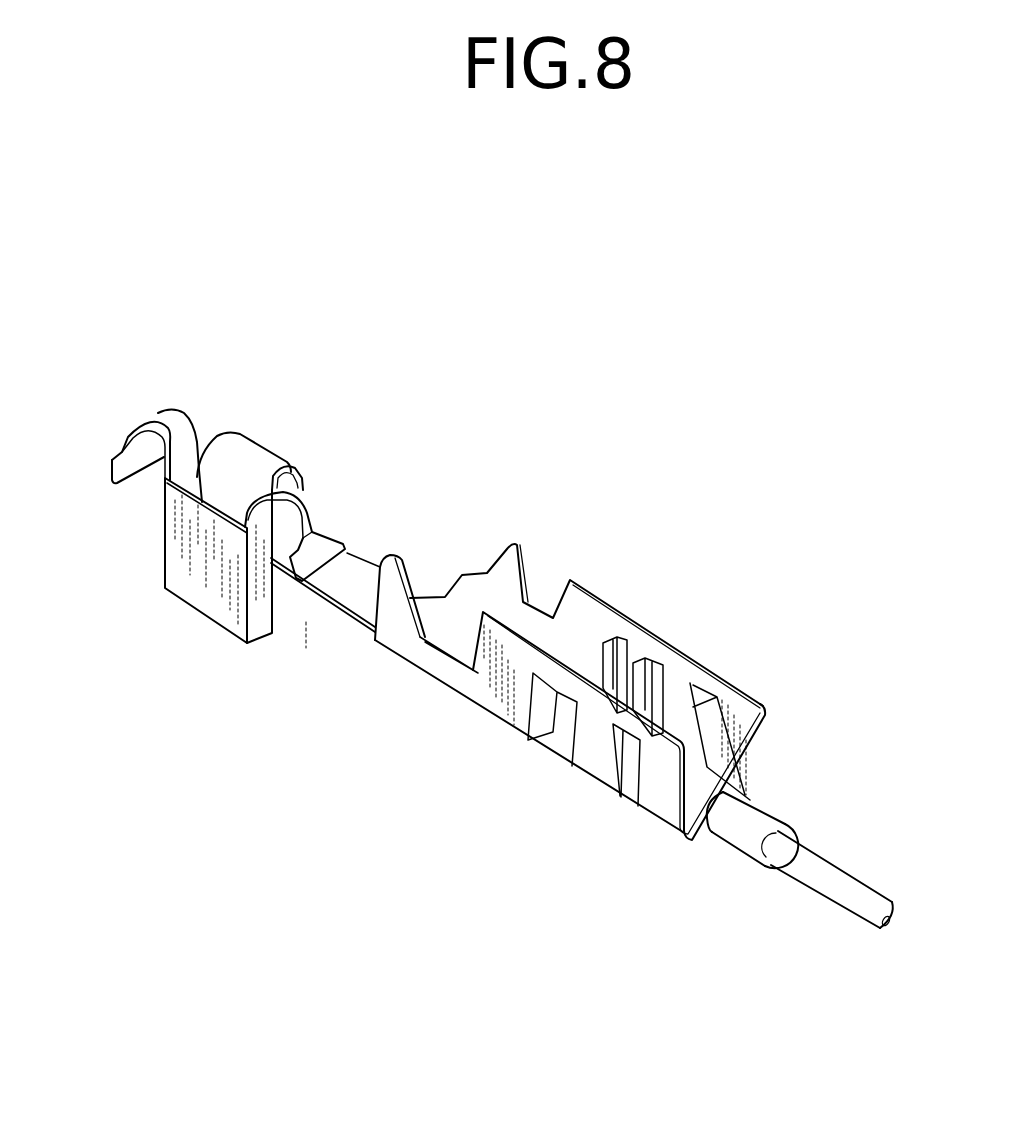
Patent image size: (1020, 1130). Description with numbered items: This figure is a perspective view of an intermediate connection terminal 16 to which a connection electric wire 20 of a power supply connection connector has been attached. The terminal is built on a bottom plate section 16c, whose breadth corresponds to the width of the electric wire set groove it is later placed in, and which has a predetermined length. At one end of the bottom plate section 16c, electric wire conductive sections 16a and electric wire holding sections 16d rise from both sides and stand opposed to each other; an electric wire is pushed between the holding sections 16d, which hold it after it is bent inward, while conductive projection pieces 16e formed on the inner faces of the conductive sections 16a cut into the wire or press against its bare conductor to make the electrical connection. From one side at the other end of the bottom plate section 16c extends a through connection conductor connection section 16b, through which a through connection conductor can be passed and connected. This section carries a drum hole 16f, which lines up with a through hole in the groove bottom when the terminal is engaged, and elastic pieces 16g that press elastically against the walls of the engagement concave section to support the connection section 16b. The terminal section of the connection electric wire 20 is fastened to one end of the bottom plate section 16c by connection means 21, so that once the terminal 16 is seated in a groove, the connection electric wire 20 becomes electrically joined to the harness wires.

The intermediate connection terminal 16 is at (632, 592).
The electric wire conductive section 16a is at (657, 740).
The through connection conductor connection section 16b is at (183, 547).
The bottom plate section 16c is at (343, 590).
The electric wire holding section 16d is at (497, 573).
The conductive projection piece 16e is at (623, 655).
The drum hole 16f is at (222, 498).
The elastic piece 16g is at (137, 448).
The connection electric wire 20 is at (832, 875).
The connection means 21 is at (760, 808).